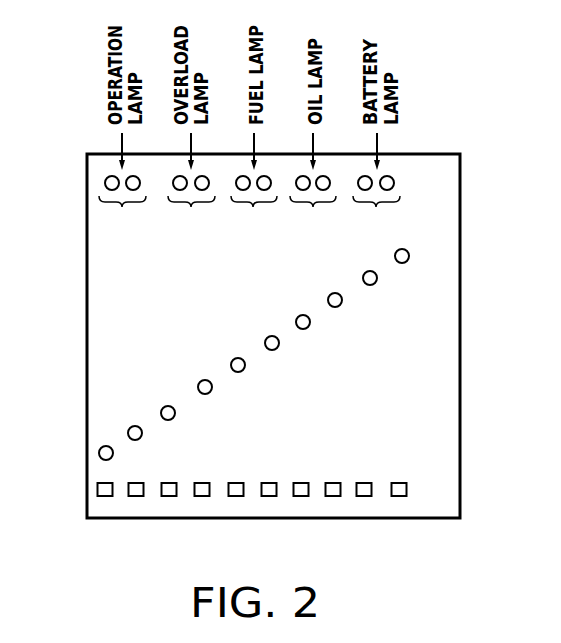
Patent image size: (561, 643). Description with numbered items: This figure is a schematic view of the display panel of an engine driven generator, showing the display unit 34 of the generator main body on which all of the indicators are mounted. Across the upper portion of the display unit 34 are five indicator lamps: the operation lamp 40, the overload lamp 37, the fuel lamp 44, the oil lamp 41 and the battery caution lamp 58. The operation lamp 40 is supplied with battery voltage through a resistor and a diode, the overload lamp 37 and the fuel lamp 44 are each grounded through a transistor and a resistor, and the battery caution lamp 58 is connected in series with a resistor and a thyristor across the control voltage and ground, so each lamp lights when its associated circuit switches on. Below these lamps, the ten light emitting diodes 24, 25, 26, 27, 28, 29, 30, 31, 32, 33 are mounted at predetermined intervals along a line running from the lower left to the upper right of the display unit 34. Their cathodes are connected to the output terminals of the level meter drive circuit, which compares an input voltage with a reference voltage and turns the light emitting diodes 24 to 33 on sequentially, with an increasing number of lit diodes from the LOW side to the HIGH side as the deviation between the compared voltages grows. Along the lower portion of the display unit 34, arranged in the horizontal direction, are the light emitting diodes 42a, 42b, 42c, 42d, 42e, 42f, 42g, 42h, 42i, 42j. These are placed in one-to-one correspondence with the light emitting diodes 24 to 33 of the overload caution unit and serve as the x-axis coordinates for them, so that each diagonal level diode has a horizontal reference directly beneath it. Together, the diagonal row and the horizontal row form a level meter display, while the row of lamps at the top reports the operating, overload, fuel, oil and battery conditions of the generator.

The light emitting diode 24 is at (99, 452).
The light emitting diode 25 is at (133, 425).
The light emitting diode 26 is at (175, 413).
The light emitting diode 27 is at (199, 382).
The light emitting diode 28 is at (243, 370).
The light emitting diode 29 is at (267, 336).
The light emitting diode 30 is at (308, 327).
The light emitting diode 31 is at (328, 297).
The light emitting diode 32 is at (375, 283).
The light emitting diode 33 is at (409, 256).
The display unit 34 is at (461, 259).
The overload lamp 37 is at (191, 209).
The operation lamp 40 is at (122, 209).
The oil lamp 41 is at (313, 209).
The fuel lamp 44 is at (254, 209).
The battery caution lamp 58 is at (376, 209).
The light emitting diode 42a is at (97, 490).
The light emitting diode 42b is at (136, 497).
The light emitting diode 42c is at (169, 482).
The light emitting diode 42d is at (202, 497).
The light emitting diode 42e is at (236, 482).
The light emitting diode 42f is at (269, 497).
The light emitting diode 42g is at (302, 482).
The light emitting diode 42h is at (333, 497).
The light emitting diode 42i is at (366, 482).
The light emitting diode 42j is at (399, 497).